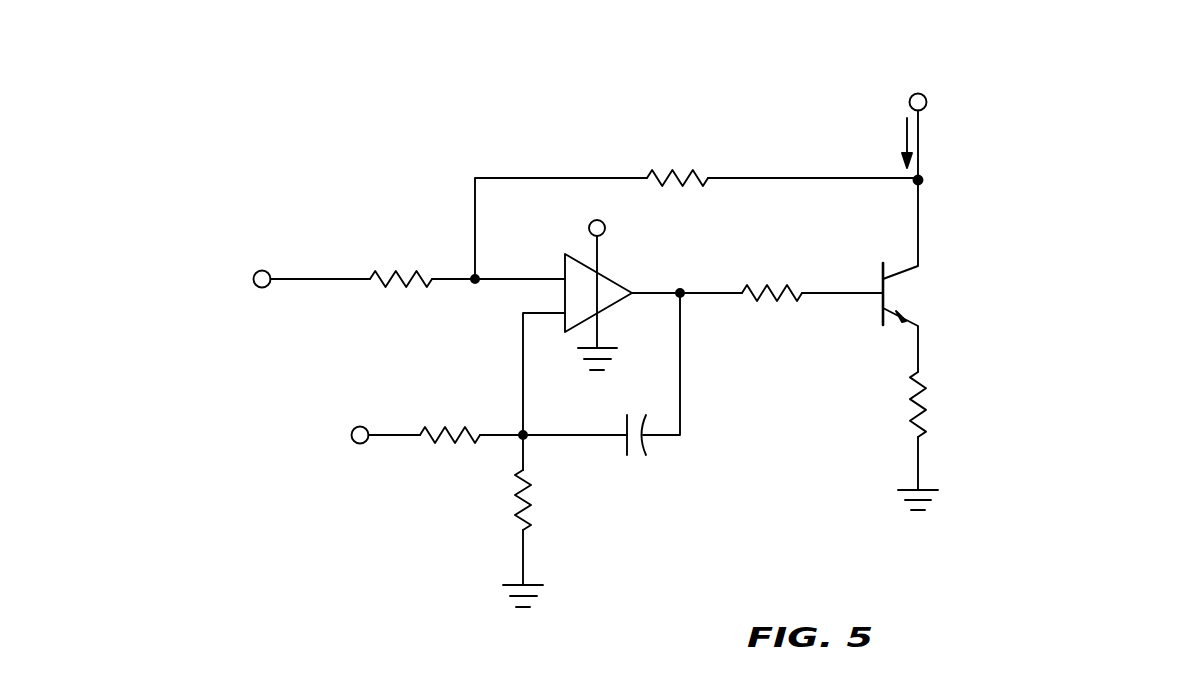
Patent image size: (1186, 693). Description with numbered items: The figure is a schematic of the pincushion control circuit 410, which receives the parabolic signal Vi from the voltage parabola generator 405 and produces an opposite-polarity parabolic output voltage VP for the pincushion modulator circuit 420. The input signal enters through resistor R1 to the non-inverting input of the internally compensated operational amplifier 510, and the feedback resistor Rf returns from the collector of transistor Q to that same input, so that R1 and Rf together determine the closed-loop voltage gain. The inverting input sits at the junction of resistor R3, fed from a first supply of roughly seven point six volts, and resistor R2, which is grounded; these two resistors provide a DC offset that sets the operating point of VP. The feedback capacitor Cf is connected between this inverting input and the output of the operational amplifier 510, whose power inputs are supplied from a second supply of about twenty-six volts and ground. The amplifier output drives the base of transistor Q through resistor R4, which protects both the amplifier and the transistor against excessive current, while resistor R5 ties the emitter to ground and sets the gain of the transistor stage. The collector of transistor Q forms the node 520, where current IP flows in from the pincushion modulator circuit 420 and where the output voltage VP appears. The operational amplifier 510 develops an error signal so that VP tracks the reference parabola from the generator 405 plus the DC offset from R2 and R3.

The voltage parabola generator 405 is at (274, 236).
The pincushion control circuit 410 is at (831, 572).
The pincushion modulator circuit 420 is at (914, 89).
The operational amplifier 510 is at (607, 278).
The node 520 is at (921, 147).
The resistor R1 is at (467, 262).
The resistor R2 is at (540, 538).
The resistor R3 is at (451, 422).
The resistor R4 is at (812, 275).
The resistor R5 is at (936, 441).
The feedback resistor Rf is at (696, 205).
The feedback capacitor Cf is at (650, 374).
The transistor Q is at (902, 275).